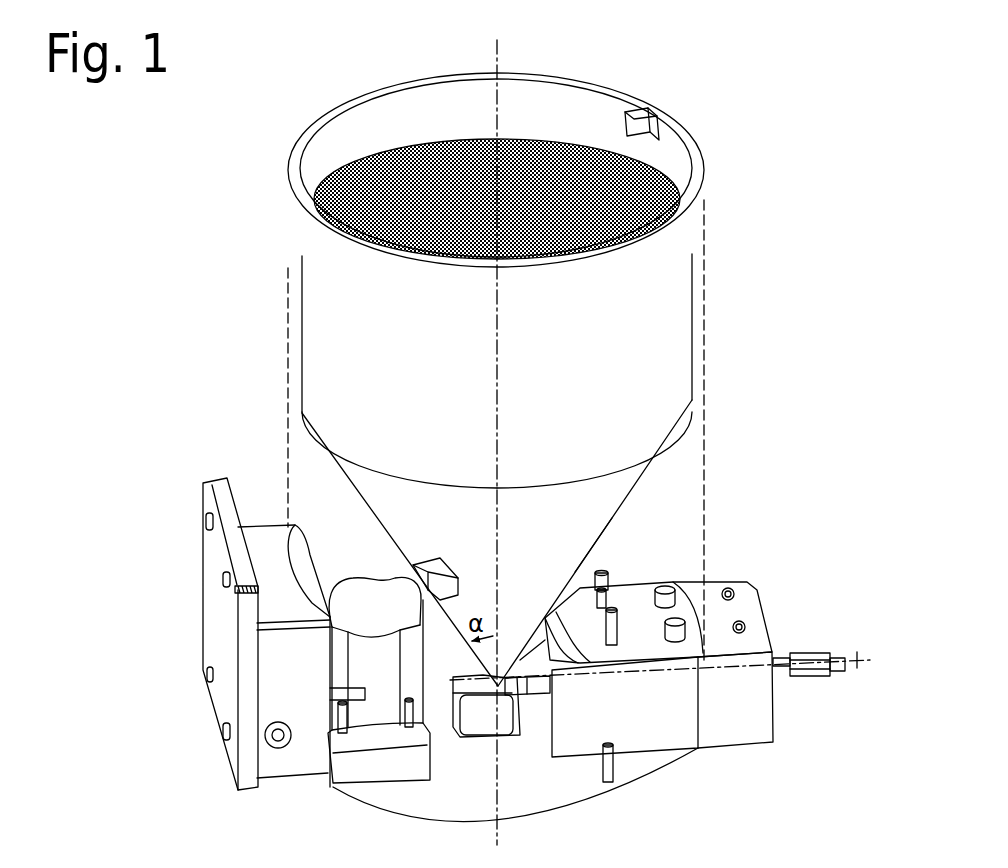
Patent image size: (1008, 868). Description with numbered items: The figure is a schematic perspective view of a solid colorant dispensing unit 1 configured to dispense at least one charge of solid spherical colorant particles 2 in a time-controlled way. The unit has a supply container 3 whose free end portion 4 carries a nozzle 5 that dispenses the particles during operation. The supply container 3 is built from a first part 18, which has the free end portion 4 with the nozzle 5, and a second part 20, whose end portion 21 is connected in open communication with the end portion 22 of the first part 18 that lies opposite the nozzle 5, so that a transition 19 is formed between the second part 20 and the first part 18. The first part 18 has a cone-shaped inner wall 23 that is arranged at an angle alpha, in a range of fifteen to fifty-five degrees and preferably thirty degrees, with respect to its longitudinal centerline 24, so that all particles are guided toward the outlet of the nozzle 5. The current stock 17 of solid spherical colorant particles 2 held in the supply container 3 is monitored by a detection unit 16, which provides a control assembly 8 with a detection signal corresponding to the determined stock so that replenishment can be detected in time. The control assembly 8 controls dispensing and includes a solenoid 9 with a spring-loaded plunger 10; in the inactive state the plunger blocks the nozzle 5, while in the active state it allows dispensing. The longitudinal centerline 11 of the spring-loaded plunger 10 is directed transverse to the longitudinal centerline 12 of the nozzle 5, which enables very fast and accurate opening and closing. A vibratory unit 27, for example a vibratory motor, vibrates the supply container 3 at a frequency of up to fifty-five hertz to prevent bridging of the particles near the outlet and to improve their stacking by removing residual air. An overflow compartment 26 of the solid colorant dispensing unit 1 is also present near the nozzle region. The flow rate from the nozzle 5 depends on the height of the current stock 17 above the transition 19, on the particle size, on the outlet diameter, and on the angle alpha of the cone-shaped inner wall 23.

The solid colorant dispensing unit 1 is at (709, 115).
The solid spherical colorant particles 2 is at (373, 183).
The supply container 3 is at (699, 260).
The free end portion 4 is at (465, 665).
The nozzle 5 is at (492, 693).
The control assembly 8 is at (775, 589).
The solenoid 9 is at (727, 723).
The spring-loaded plunger 10 is at (540, 718).
The longitudinal centerline of the spring-loaded plunger 11 is at (857, 661).
The longitudinal centerline of the nozzle 12 is at (499, 57).
The detection unit 16 is at (647, 112).
The current stock 17 is at (558, 131).
The first part 18 is at (547, 533).
The transition 19 is at (677, 445).
The second part 20 is at (623, 315).
The end portion of the second part 21 is at (633, 397).
The end portion of the first part 22 is at (640, 470).
The cone-shaped inner wall 23 is at (357, 474).
The longitudinal centerline of the first part 24 is at (500, 590).
The overflow compartment 26 is at (458, 749).
The vibratory unit 27 is at (417, 565).